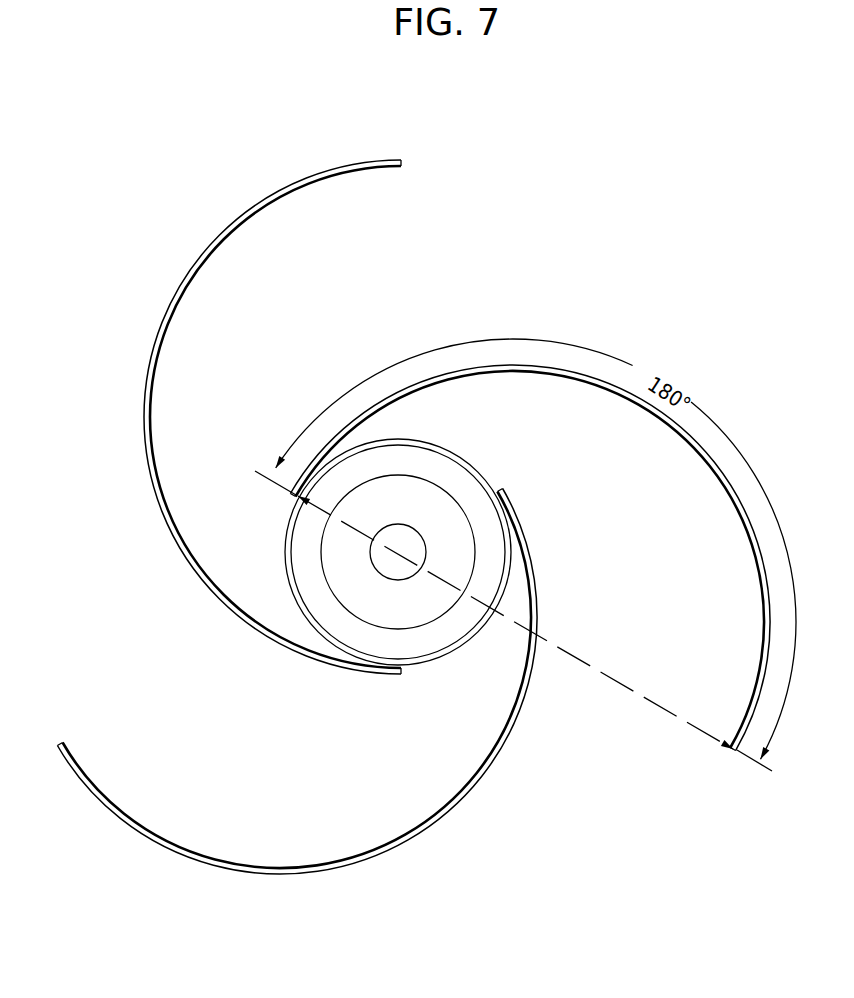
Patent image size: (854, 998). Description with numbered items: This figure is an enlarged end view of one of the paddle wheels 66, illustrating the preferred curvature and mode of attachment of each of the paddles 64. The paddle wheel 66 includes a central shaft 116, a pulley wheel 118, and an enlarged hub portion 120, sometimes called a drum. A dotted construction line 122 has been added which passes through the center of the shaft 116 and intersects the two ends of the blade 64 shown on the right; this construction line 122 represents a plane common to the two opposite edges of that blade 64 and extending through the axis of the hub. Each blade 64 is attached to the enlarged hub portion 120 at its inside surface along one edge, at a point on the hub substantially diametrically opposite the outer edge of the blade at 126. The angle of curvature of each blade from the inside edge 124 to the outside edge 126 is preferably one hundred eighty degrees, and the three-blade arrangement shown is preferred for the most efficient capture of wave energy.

The paddle 64 is at (290, 188).
The paddle wheel 66 is at (166, 593).
The central shaft 116 is at (407, 535).
The pulley wheel 118 is at (375, 612).
The enlarged hub portion 120 is at (442, 640).
The construction line 122 is at (615, 680).
The inside edge 124 is at (296, 495).
The outside edge 126 is at (734, 752).